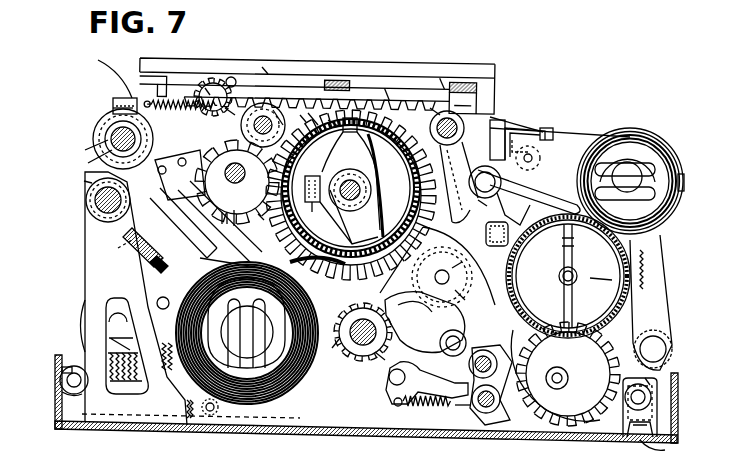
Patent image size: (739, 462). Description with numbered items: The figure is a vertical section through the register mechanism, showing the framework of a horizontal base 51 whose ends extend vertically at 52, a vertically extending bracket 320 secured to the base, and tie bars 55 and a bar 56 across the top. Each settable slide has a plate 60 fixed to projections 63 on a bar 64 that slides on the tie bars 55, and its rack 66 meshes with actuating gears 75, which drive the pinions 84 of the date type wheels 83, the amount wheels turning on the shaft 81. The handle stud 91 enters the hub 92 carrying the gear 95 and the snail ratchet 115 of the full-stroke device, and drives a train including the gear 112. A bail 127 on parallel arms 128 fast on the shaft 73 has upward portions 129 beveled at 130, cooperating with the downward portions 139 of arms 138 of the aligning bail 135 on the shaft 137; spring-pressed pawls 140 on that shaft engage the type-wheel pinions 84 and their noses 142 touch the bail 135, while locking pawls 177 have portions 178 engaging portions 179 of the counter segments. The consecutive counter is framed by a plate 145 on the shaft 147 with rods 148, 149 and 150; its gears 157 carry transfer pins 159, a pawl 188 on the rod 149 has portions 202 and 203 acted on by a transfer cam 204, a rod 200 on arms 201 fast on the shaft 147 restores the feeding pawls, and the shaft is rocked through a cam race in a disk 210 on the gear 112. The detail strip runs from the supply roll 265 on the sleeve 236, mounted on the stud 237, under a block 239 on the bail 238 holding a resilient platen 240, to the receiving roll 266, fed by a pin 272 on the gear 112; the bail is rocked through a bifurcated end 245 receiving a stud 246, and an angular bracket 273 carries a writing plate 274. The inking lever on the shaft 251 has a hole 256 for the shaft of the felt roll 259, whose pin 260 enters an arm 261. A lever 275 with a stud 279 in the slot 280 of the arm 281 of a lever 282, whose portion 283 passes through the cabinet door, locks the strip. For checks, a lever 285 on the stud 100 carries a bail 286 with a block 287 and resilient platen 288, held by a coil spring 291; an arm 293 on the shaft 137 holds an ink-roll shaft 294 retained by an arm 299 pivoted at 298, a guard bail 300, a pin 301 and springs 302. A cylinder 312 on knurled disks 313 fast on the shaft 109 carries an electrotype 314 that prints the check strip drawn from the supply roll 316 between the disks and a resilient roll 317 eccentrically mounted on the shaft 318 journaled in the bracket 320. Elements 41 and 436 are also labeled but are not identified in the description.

The gear 41 is at (237, 182).
The horizontal base 51 is at (585, 440).
The vertically extended ends of base 52 is at (62, 371).
The tie bars 55 is at (375, 66).
The bar 56 is at (106, 69).
The plate 60 is at (265, 67).
The projections 63 is at (140, 68).
The bar 64 is at (420, 84).
The rack 66 is at (388, 84).
The shaft 73 is at (362, 190).
The gears 75 is at (432, 104).
The shaft 81 is at (250, 225).
The date type wheels 83 is at (233, 224).
The pinion 84 is at (215, 225).
The stud 91 is at (476, 186).
The hub 92 is at (471, 207).
The gear 95 is at (540, 186).
The stud 100 is at (267, 398).
The shaft 109 is at (115, 136).
The gear 112 is at (578, 404).
The snail ratchet 115 is at (532, 245).
The bail 127 is at (313, 177).
The parallel arms 128 is at (313, 214).
The upwardly extending portion 129 is at (342, 153).
The bevel 130 is at (345, 140).
The bail 135 is at (151, 87).
The shaft 137 is at (273, 110).
The arms 138 is at (308, 113).
The downwardly extending portions 139 is at (382, 128).
The spring pressed pawl 140 is at (256, 70).
The nose 142 is at (230, 73).
The plate 145 is at (382, 362).
The shaft 147 is at (362, 350).
The rod 148 is at (470, 257).
The rod 149 is at (460, 342).
The rod 150 is at (388, 404).
The gear 157 is at (442, 267).
The pin 159 is at (462, 296).
The pawls 177 is at (206, 88).
The portion 178 is at (300, 115).
The portion 179 is at (328, 120).
The pawl 188 is at (427, 381).
The rod 200 is at (352, 362).
The parallel arms 201 is at (342, 350).
The portion 202 is at (462, 333).
The portion 203 is at (407, 297).
The transfer cam 204 is at (317, 282).
The disk 210 is at (550, 412).
The sleeve 236 is at (640, 166).
The stud 237 is at (650, 166).
The bail 238 is at (454, 167).
The block 239 is at (510, 128).
The resilient platen 240 is at (504, 122).
The bifurcated end 245 is at (580, 130).
The stud 246 is at (540, 156).
The shaft 251 is at (468, 415).
The hole 256 is at (470, 102).
The roll 259 is at (443, 73).
The pin 260 is at (498, 357).
The arm 261 is at (500, 380).
The supply roll 265 is at (612, 142).
The receiving roll 266 is at (612, 280).
The pin 272 is at (566, 374).
The angular bracket 273 is at (553, 128).
The plate 274 is at (540, 126).
The lever 275 is at (663, 307).
The stud 279 is at (650, 385).
The slot 280 is at (660, 396).
The arm 281 is at (658, 410).
The lever 282 is at (658, 428).
The portion 283 is at (665, 450).
The lever 285 is at (207, 262).
The bail 286 is at (172, 261).
The block 287 is at (112, 251).
The resilient platen 288 is at (135, 228).
The coil spring 291 is at (128, 386).
The arm 293 is at (230, 110).
The shaft 294 is at (217, 221).
The pivot 298 is at (180, 169).
The arm 299 is at (118, 98).
The bail 300 is at (167, 198).
The pin 301 is at (181, 112).
The springs 302 is at (220, 80).
The cylinder 312 is at (80, 150).
The knurled disks 313 is at (83, 162).
The electrotype 314 is at (113, 108).
The supply roll 316 is at (262, 398).
The resilient roll 317 is at (84, 181).
The shaft 318 is at (95, 200).
The bracket 320 is at (111, 298).
The shaft 436 is at (235, 165).